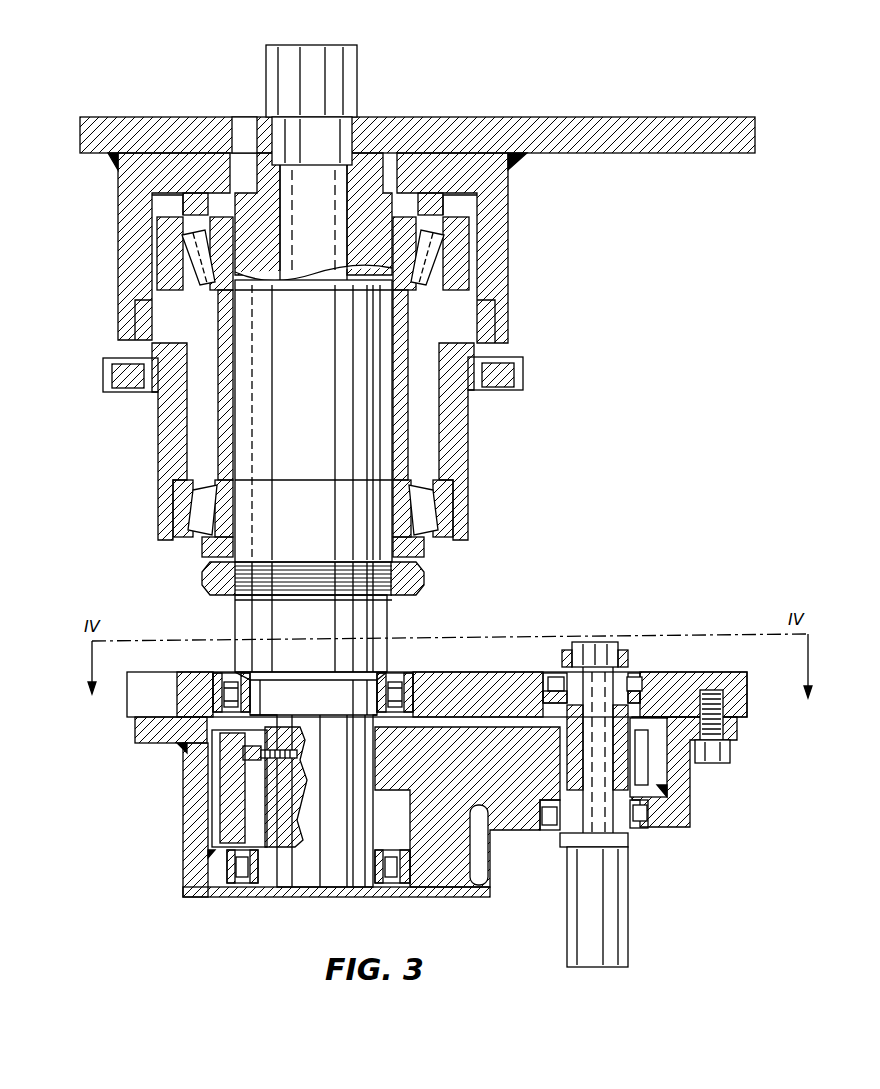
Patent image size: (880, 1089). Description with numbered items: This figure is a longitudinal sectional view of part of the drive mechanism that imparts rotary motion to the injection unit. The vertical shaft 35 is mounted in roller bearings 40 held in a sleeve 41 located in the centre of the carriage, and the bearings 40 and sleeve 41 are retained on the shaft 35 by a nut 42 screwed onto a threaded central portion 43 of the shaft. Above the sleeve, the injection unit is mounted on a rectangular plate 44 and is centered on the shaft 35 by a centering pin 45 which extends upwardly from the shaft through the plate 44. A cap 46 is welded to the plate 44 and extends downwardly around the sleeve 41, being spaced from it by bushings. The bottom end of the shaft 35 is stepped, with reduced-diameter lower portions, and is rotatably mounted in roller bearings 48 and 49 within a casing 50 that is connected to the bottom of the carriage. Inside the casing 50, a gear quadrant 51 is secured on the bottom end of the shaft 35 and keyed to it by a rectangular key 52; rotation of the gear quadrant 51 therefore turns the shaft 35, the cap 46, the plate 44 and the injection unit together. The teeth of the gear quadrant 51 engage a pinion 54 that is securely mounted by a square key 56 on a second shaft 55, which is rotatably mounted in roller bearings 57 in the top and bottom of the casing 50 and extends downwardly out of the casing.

The shaft 35 is at (402, 445).
The roller bearings 40 is at (182, 260).
The sleeve 41 is at (158, 443).
The nut 42 is at (403, 597).
The threaded central portion 43 is at (257, 593).
The rectangular plate 44 is at (515, 104).
The centering pin 45 is at (357, 90).
The cap 46 is at (500, 262).
The roller bearings 48 is at (217, 673).
The roller bearings 49 is at (230, 887).
The casing 50 is at (190, 808).
The gear quadrant 51 is at (453, 733).
The rectangular key 52 is at (250, 823).
The pinion 54 is at (643, 767).
The shaft 55 is at (615, 910).
The square key 56 is at (567, 753).
The roller bearings 57 is at (633, 677).